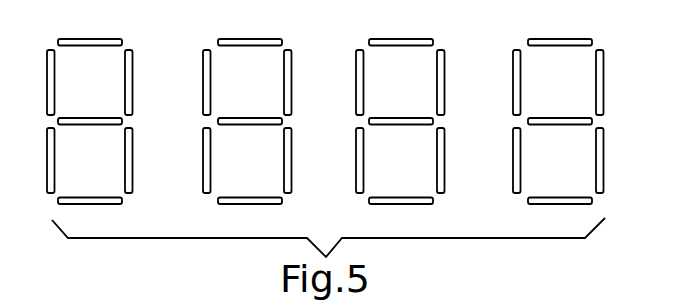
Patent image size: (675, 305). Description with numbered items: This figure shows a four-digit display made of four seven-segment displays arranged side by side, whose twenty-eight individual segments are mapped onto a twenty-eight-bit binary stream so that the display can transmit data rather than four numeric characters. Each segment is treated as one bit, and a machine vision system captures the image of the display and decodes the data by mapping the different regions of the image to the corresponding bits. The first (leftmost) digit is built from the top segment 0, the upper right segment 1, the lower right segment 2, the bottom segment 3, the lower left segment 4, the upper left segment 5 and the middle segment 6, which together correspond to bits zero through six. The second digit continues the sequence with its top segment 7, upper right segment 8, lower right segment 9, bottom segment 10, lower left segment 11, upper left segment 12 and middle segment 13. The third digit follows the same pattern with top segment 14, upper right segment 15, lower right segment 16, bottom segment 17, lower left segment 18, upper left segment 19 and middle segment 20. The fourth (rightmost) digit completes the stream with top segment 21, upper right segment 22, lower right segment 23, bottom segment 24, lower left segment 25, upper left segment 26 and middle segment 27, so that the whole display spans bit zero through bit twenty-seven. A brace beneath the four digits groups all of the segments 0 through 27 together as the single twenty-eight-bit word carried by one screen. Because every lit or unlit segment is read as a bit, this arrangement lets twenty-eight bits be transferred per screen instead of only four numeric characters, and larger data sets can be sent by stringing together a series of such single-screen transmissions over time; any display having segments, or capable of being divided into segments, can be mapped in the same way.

The segment 0 is at (90, 33).
The segment 1 is at (135, 82).
The segment 2 is at (135, 160).
The segment 3 is at (90, 214).
The segment 4 is at (44, 160).
The segment 5 is at (44, 82).
The segment 6 is at (90, 111).
The segment 7 is at (250, 33).
The segment 8 is at (294, 82).
The segment 9 is at (294, 160).
The segment 10 is at (250, 214).
The segment 11 is at (197, 160).
The segment 12 is at (195, 82).
The segment 13 is at (250, 111).
The segment 14 is at (401, 33).
The segment 15 is at (450, 82).
The segment 16 is at (450, 160).
The segment 17 is at (401, 214).
The segment 18 is at (349, 160).
The segment 19 is at (349, 82).
The segment 20 is at (401, 111).
The segment 21 is at (560, 33).
The segment 22 is at (611, 82).
The segment 23 is at (611, 160).
The segment 24 is at (560, 214).
The segment 25 is at (505, 160).
The segment 26 is at (505, 82).
The segment 27 is at (560, 111).